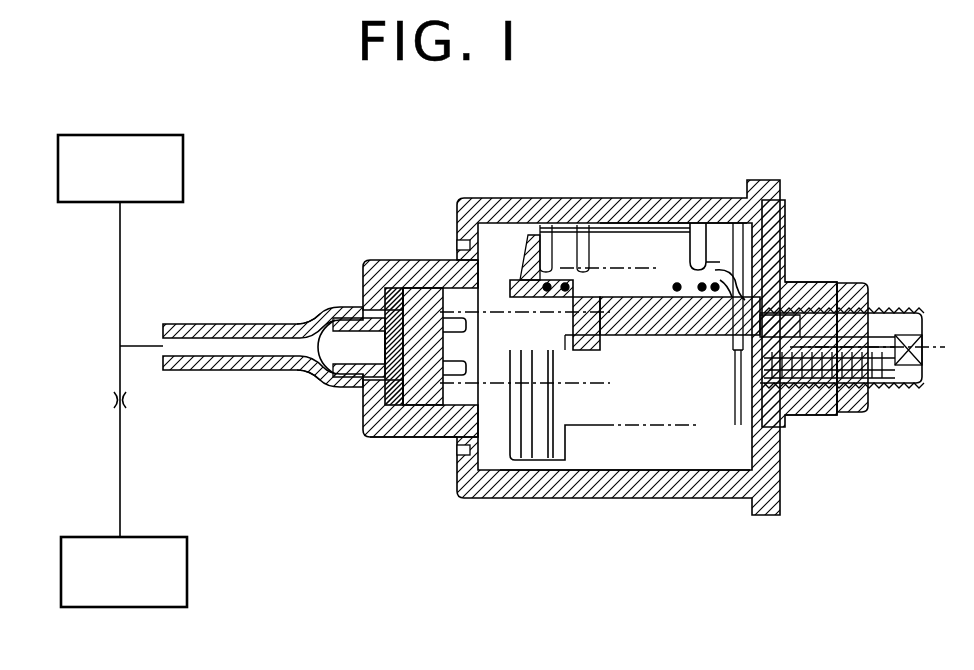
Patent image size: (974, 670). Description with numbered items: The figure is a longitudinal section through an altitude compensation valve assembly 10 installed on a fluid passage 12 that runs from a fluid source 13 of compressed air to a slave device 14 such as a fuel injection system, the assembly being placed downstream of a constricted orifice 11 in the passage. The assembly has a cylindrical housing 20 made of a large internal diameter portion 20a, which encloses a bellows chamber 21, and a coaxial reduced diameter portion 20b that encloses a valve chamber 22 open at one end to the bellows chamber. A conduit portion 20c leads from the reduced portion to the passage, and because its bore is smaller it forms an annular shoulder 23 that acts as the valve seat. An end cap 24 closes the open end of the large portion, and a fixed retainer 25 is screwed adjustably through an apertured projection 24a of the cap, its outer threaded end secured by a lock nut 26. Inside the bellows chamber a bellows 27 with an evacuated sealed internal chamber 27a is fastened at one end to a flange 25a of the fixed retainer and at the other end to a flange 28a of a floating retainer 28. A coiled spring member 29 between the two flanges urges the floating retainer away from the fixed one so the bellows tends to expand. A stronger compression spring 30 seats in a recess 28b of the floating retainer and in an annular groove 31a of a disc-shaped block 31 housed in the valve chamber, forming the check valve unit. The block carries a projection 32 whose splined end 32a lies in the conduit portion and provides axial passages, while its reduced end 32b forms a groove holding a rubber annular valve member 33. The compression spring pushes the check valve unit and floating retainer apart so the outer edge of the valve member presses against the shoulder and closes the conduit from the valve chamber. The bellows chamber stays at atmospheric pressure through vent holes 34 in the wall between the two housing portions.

The altitude compensation valve assembly 10 is at (808, 176).
The orifice 11 is at (127, 400).
The fluid passage 12 is at (121, 477).
The fluid source 13 is at (187, 573).
The slave device 14 is at (183, 170).
The housing 20 is at (716, 190).
The large internal diameter portion 20a is at (632, 200).
The reduced diameter portion 20b is at (408, 435).
The conduit portion 20c is at (296, 378).
The bellows chamber 21 is at (728, 490).
The valve chamber 22 is at (393, 262).
The annular shoulder 23 is at (350, 310).
The end cap 24 is at (786, 245).
The apertured projection 24a is at (842, 300).
The fixed retainer 25 is at (757, 290).
The flange of fixed retainer 25a is at (731, 270).
The lock nut 26 is at (870, 300).
The bellows 27 is at (693, 258).
The sealed internal chamber 27a is at (607, 228).
The floating retainer 28 is at (505, 278).
The flange of floating retainer 28a is at (530, 236).
The recess 28b is at (566, 345).
The coiled spring member 29 is at (565, 284).
The compression spring 30 is at (440, 437).
The disc-shaped block 31 is at (425, 288).
The annular groove 31a is at (469, 346).
The projection 32 is at (350, 377).
The pipe flare 32a is at (310, 323).
The reduced diameter end 32b is at (365, 410).
The annular valve member 33 is at (392, 282).
The vent holes 34 is at (455, 242).